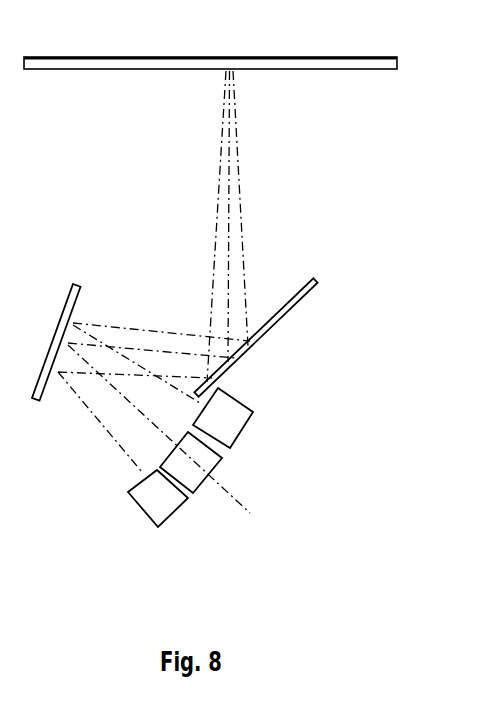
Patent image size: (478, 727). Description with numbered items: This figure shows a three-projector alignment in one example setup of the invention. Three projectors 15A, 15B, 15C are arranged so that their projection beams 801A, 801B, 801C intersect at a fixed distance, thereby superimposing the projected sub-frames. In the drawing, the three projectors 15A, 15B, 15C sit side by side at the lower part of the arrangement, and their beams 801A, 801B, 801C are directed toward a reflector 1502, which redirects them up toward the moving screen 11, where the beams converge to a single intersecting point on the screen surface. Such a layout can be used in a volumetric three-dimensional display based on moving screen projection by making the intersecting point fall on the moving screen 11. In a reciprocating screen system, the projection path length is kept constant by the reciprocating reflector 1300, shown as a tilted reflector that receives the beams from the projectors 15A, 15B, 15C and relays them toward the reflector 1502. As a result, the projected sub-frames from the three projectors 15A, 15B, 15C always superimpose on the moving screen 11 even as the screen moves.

The moving screen 11 is at (382, 58).
The projection beam 801A is at (250, 190).
The projection beam 801B is at (235, 237).
The projection beam 801C is at (216, 283).
The mirror 1502 is at (290, 325).
The reciprocating reflector 1300 is at (43, 393).
The projector 15A is at (258, 412).
The projector 15B is at (223, 468).
The projector 15C is at (170, 527).